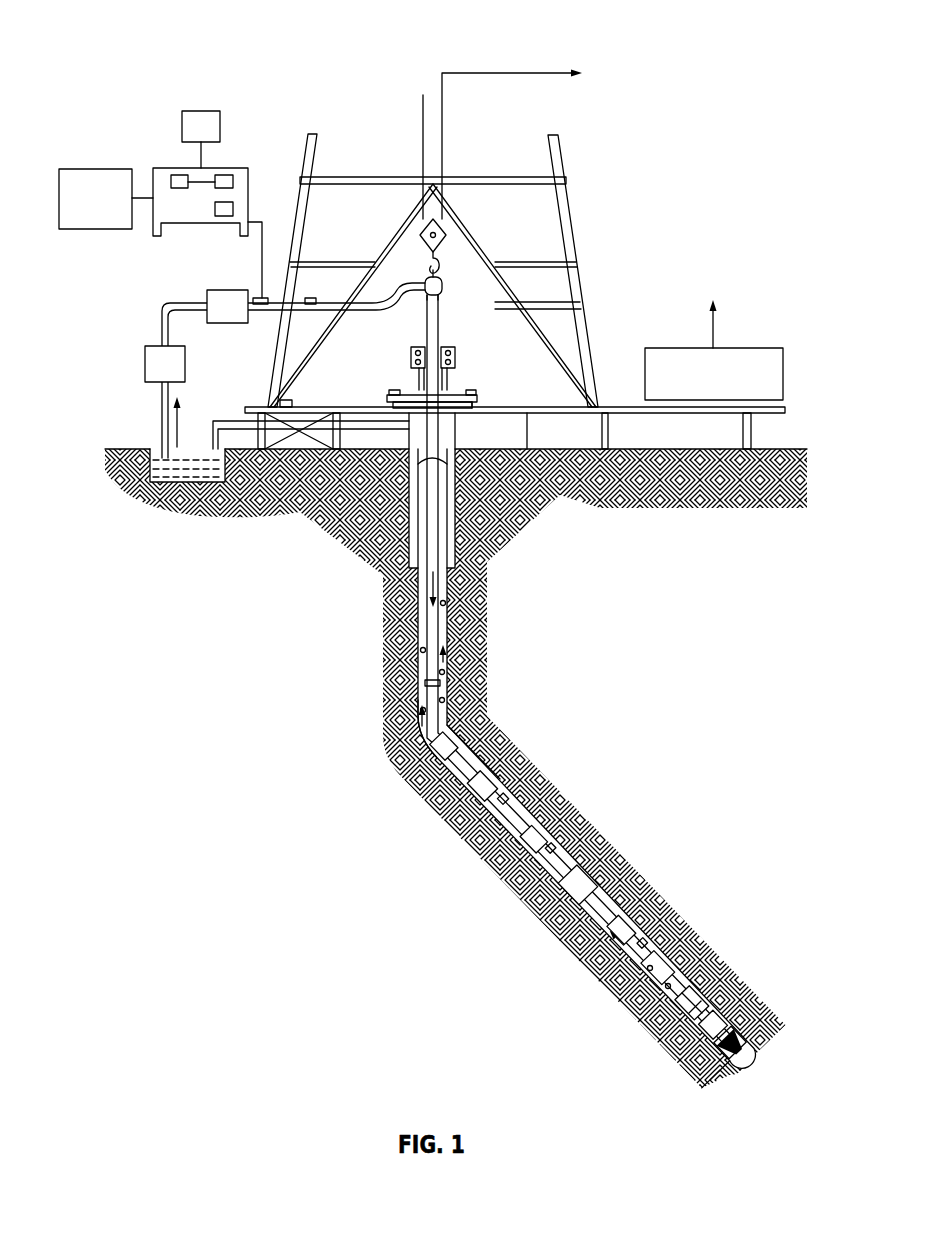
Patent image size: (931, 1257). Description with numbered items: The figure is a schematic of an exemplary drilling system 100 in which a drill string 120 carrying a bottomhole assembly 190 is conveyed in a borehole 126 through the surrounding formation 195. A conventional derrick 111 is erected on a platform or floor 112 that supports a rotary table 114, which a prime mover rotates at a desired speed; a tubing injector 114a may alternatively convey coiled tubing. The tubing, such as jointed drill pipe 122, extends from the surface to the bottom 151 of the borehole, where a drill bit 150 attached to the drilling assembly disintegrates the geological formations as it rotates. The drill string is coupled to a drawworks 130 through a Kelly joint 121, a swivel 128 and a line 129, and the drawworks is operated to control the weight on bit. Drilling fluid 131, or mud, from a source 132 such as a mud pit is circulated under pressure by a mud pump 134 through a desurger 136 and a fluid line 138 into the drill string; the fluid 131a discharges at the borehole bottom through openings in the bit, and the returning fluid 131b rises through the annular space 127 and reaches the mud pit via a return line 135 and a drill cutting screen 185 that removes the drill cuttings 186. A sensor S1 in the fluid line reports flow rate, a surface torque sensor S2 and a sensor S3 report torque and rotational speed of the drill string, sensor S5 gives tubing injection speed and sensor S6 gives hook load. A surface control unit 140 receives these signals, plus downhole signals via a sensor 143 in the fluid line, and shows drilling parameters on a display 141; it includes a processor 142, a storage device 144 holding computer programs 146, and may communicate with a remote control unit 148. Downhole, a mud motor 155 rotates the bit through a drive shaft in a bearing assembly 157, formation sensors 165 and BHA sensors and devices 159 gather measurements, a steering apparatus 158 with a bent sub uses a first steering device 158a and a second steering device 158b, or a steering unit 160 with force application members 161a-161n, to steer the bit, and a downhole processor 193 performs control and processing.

The drilling system 100 is at (132, 40).
The derrick 111 is at (578, 268).
The platform or floor 112 is at (600, 403).
The rotary table 114 is at (462, 393).
The tubing injector 114a is at (458, 357).
The drill string 120 is at (478, 632).
The Kelly joint 121 is at (443, 333).
The drill pipe 122 is at (418, 638).
The borehole 126 is at (458, 708).
The annular space 127 is at (485, 750).
The swivel 128 is at (420, 288).
The line 129 is at (443, 157).
The drawworks 130 is at (742, 348).
The drilling fluid 131 is at (152, 484).
The drilling fluid from the drilling tubular 131a is at (430, 585).
The returning drilling fluid 131b is at (417, 735).
The source of drilling fluid 132 is at (170, 460).
The mud pump 134 is at (145, 360).
The return line 135 is at (355, 432).
The desurger 136 is at (207, 300).
The fluid line 138 is at (278, 310).
The surface control unit 140 is at (186, 169).
The display/monitor 141 is at (200, 110).
The processor 142 is at (178, 175).
The sensor 143 is at (258, 298).
The storage device 144 is at (227, 175).
The computer programs 146 is at (222, 216).
The remote control unit 148 is at (115, 169).
The drill bit 150 is at (762, 1024).
The bottom of the borehole 151 is at (715, 1087).
The downhole motor 155 is at (517, 805).
The bearing assembly 157 is at (758, 936).
The steering apparatus 158 is at (730, 985).
The first steering device 158a is at (695, 1063).
The second steering device 158b is at (705, 1035).
The sensors and devices 159 is at (750, 1000).
The steering unit 160 is at (695, 1012).
The force application members 161a-161n is at (713, 963).
The sensors 165 is at (598, 955).
The drill cutting screen 185 is at (283, 400).
The drill cuttings 186 is at (447, 603).
The bottomhole assembly 190 is at (619, 887).
The downhole processor 193 is at (567, 913).
The formation 195 is at (701, 800).
The sensor S1 is at (312, 297).
The surface torque sensor S2 is at (478, 398).
The sensor S3 is at (390, 393).
The sensor S5 is at (445, 302).
The sensor S6 is at (438, 265).